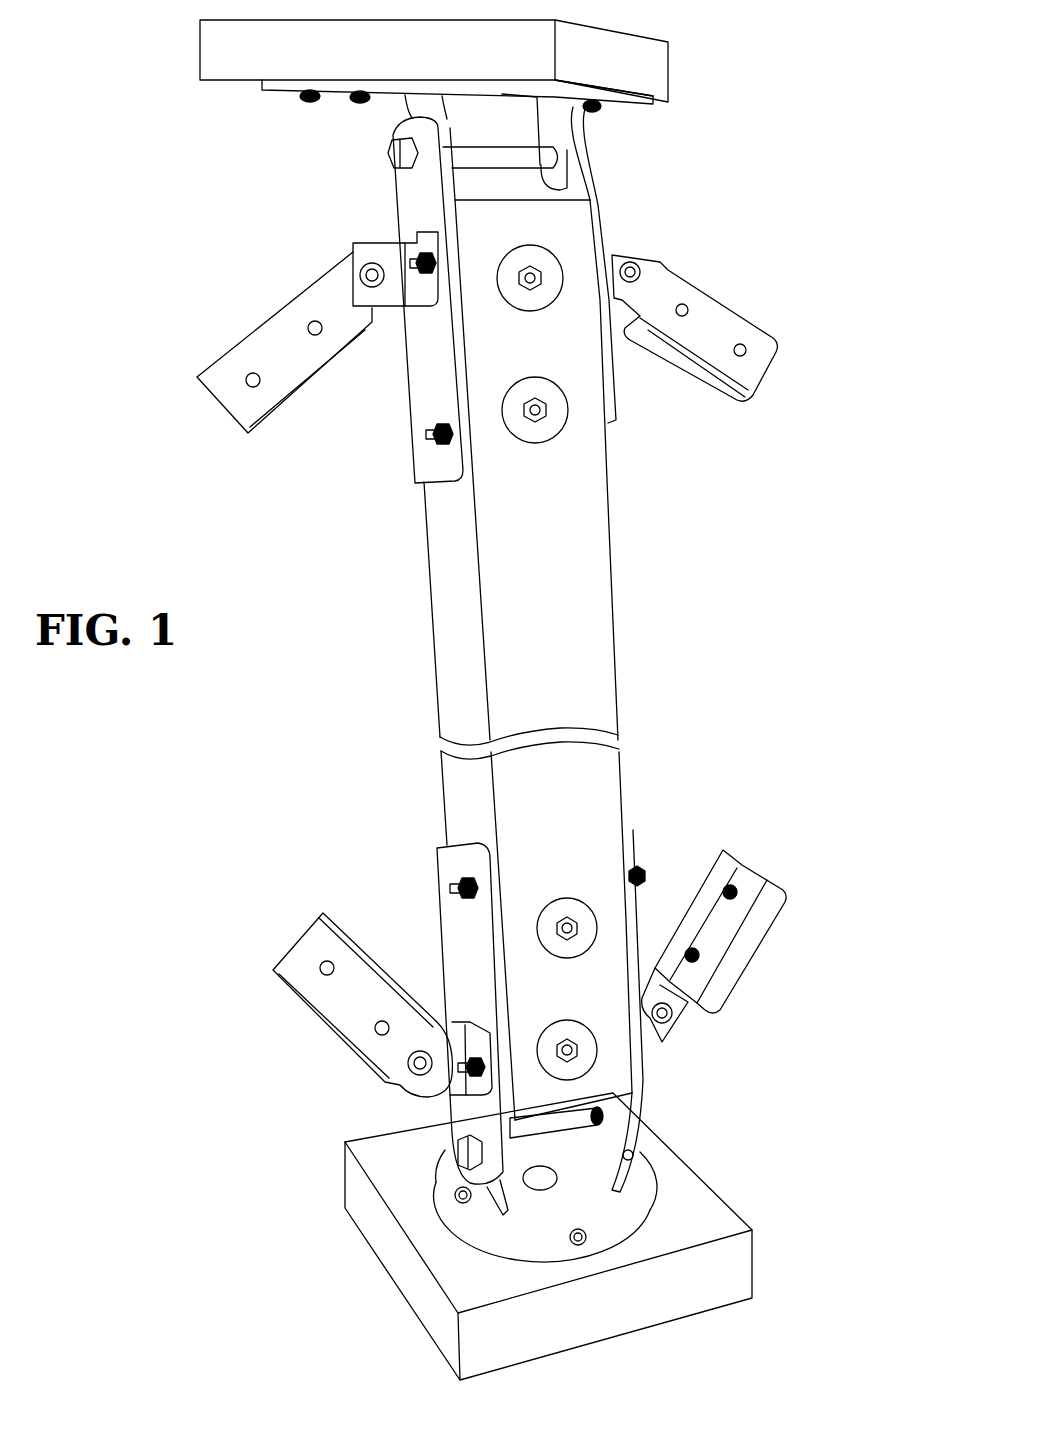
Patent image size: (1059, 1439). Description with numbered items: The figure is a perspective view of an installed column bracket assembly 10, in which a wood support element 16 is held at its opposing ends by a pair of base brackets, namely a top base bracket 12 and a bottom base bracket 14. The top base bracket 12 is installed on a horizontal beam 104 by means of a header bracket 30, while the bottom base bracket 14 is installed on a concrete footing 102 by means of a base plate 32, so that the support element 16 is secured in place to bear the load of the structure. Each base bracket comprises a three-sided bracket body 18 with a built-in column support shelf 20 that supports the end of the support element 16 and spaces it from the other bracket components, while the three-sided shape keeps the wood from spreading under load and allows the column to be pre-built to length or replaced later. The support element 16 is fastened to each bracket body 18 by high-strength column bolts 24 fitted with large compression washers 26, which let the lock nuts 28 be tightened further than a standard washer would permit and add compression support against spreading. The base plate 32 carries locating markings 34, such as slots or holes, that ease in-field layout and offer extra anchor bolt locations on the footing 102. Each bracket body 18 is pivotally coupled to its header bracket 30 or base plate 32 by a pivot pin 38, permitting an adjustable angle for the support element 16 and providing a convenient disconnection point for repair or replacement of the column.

The column bracket assembly 10 is at (838, 104).
The top base bracket 12 is at (248, 188).
The bottom base bracket 14 is at (650, 1137).
The support element 16 is at (627, 782).
The bracket body 18 is at (600, 176).
The column support shelf 20 is at (491, 674).
The column bolts 24 is at (545, 278).
The compression washers 26 is at (542, 298).
The lock nuts 28 is at (462, 887).
The header bracket 30 is at (619, 110).
The base plate 32 is at (512, 1237).
The locating markings 34 is at (632, 1154).
The pivot pin 38 is at (465, 157).
The footing 102 is at (714, 1222).
The beam 104 is at (592, 22).